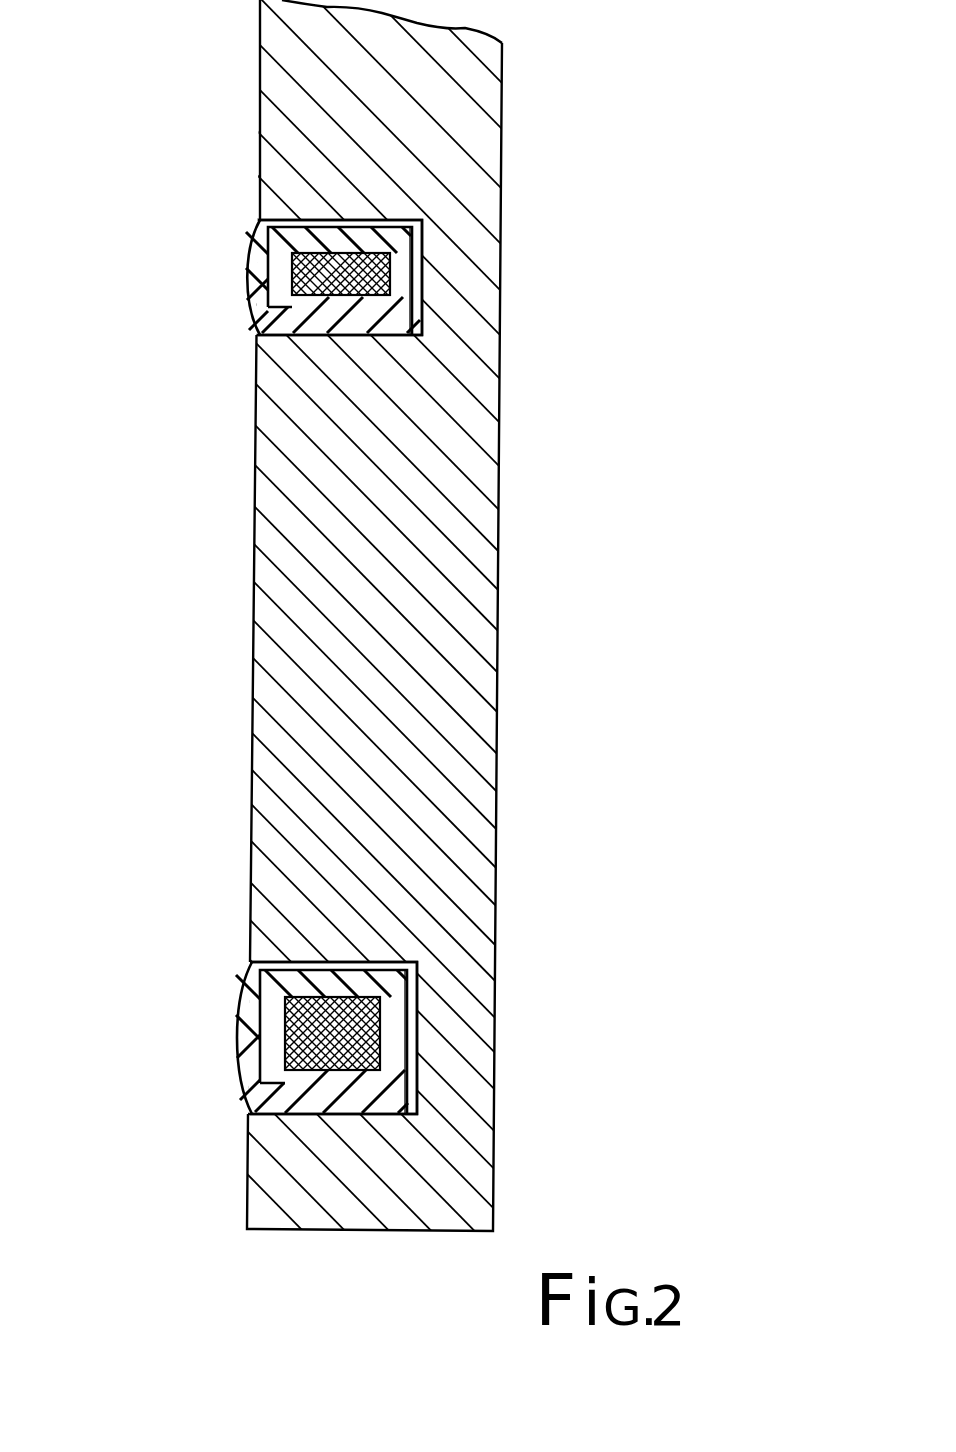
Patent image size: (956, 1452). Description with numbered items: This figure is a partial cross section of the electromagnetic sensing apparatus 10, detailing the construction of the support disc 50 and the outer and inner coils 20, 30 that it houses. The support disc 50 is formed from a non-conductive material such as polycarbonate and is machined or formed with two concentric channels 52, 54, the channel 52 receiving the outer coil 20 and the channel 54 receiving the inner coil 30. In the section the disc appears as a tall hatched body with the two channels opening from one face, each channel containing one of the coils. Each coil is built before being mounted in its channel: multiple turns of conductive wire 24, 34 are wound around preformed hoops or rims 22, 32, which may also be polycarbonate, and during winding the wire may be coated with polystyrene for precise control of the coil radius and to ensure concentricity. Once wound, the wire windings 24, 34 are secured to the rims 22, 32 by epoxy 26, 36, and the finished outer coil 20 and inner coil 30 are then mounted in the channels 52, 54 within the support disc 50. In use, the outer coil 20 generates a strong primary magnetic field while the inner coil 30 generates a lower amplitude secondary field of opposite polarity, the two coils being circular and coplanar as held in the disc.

The electromagnetic sensing apparatus 10 is at (610, 705).
The outer coil 20 is at (223, 1063).
The rim 22 is at (417, 978).
The conductive wire 24 is at (420, 1015).
The epoxy 26 is at (420, 1100).
The inner coil 30 is at (232, 263).
The rim 32 is at (425, 245).
The conductive wire 34 is at (408, 277).
The epoxy 36 is at (420, 317).
The support disc 50 is at (437, 620).
The channel 52 is at (303, 960).
The channel 54 is at (303, 212).